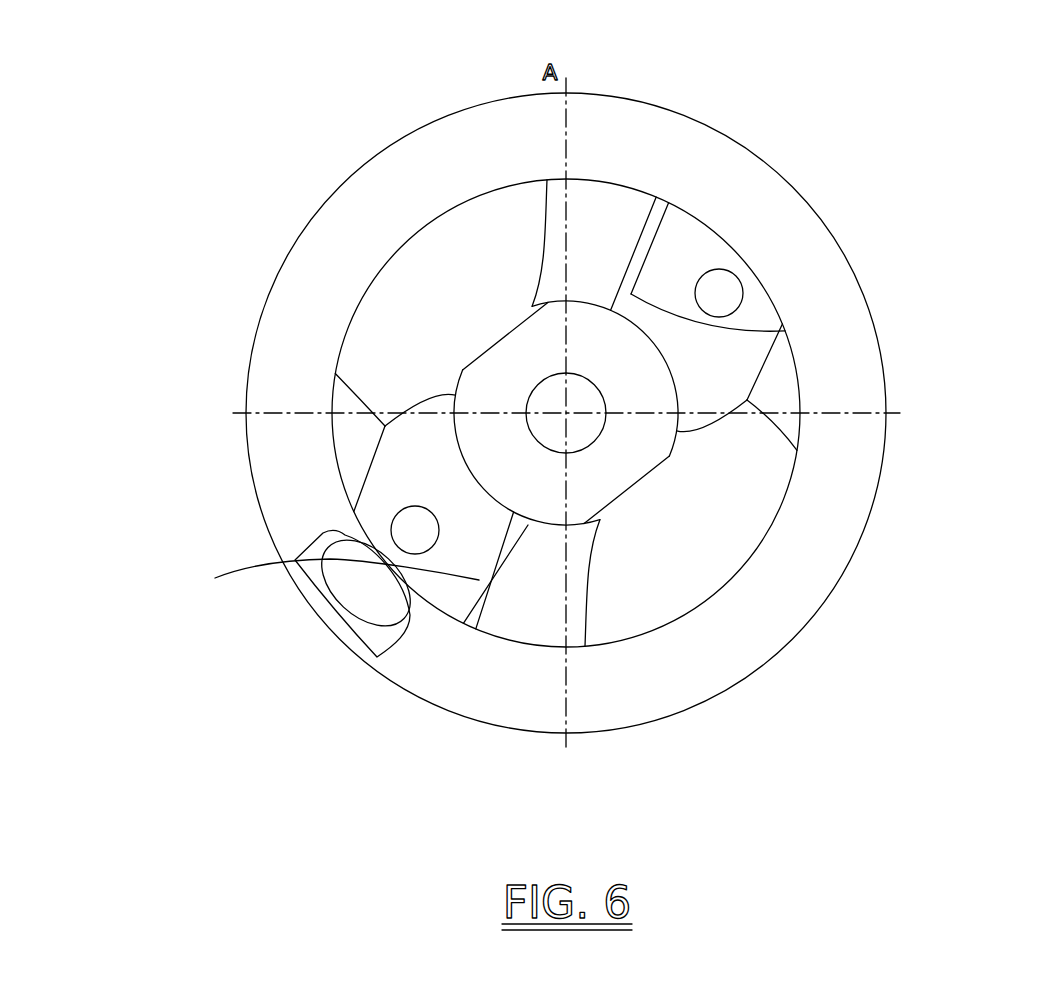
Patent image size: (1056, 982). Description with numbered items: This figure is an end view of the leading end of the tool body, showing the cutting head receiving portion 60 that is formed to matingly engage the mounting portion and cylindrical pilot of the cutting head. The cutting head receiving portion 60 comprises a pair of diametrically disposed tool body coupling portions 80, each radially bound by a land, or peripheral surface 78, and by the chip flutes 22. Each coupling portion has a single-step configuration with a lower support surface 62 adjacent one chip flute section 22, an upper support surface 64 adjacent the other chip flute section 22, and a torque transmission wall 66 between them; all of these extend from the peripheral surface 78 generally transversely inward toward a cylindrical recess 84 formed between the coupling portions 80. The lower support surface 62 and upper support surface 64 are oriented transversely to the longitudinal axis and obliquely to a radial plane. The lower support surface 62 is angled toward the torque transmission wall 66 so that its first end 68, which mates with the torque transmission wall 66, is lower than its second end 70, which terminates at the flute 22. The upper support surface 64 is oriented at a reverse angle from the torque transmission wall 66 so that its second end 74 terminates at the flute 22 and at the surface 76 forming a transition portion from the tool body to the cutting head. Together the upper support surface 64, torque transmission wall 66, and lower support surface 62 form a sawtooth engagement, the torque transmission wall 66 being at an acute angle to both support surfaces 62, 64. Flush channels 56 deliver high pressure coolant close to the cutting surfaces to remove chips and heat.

The chip flutes 22 is at (457, 275).
The flush channels 56 is at (737, 276).
The cutting head receiving portion 60 is at (639, 182).
The lower support surface 62 is at (558, 218).
The upper support surface 64 is at (757, 307).
The torque transmission wall 66 is at (785, 331).
The first end of the lower support surface 68 is at (630, 257).
The second end of the lower support surface 70 is at (543, 242).
The second end of the upper support surface 74 is at (747, 400).
The transition surface 76 is at (780, 370).
The peripheral surface 78 is at (727, 243).
The tool body coupling portions 80 is at (708, 212).
The cylindrical recess 84 is at (470, 383).